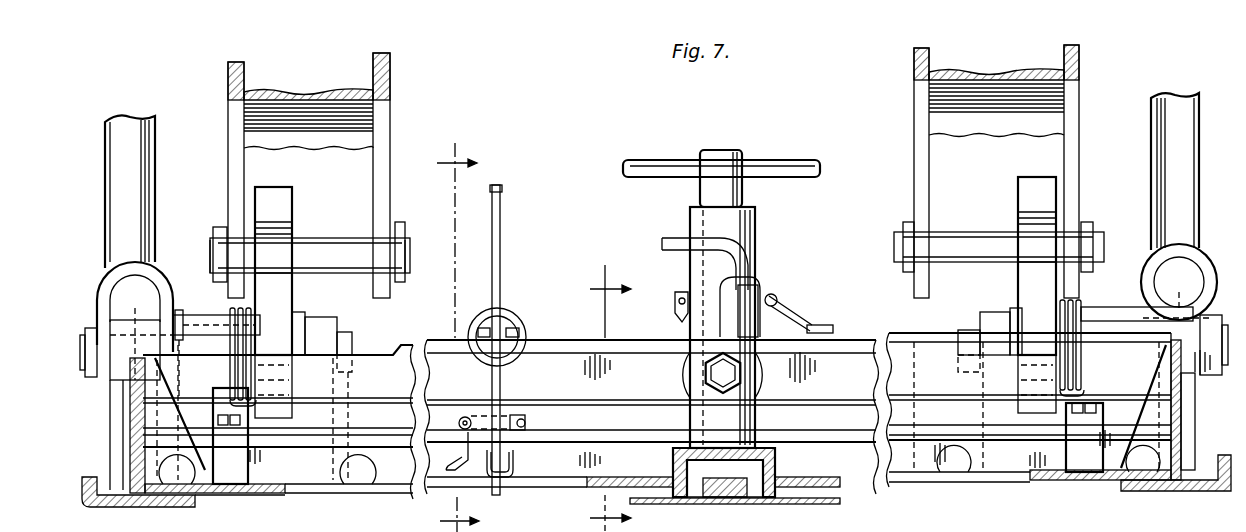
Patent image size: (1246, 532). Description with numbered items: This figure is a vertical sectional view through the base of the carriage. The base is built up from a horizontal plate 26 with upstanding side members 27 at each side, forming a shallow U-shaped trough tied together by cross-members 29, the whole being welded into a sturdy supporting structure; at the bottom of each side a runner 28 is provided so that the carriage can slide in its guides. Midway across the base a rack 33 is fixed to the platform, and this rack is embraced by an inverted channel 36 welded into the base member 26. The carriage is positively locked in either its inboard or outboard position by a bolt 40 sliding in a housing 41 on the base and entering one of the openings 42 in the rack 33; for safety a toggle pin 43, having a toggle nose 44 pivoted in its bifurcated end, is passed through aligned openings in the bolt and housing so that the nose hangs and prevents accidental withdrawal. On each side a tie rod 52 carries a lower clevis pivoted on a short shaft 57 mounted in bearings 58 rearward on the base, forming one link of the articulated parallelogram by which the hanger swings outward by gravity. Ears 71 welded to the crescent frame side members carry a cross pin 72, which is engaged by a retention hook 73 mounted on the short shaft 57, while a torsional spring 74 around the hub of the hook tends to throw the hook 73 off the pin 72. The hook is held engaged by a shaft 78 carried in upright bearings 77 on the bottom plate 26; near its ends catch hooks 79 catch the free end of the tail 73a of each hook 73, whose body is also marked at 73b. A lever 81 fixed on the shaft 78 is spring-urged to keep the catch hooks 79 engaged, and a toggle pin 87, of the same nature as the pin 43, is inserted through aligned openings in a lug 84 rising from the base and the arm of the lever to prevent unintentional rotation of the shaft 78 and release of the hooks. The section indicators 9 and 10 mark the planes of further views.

The section line 9- 9 is at (456, 336).
The section line 10- 10 is at (605, 398).
The horizontal plate 26 is at (259, 493).
The side members 27 is at (133, 430).
The runner 28 is at (108, 492).
The cross-members 29 is at (558, 338).
The rack 33 is at (690, 499).
The inverted channel 36 is at (776, 460).
The bolt 40 is at (700, 198).
The housing 41 is at (756, 240).
The openings 42 is at (750, 504).
The toggle pin 43 is at (772, 298).
The toggle nose 44 is at (676, 310).
The tie rod 52 is at (142, 184).
The short shaft 57 is at (965, 330).
The bearings 58 is at (318, 323).
The ears 71 is at (392, 70).
The pin 72 is at (326, 243).
The retention hook 73 is at (285, 197).
The tail 73a is at (270, 331).
The upper post portion 73b is at (288, 277).
The torsional spring 74 is at (228, 312).
The bearings 77 is at (228, 472).
The shaft 78 is at (658, 405).
The catch hook 79 is at (279, 372).
The lever 81 is at (499, 236).
The lug 84 is at (512, 458).
The toggle pin 87 is at (536, 412).